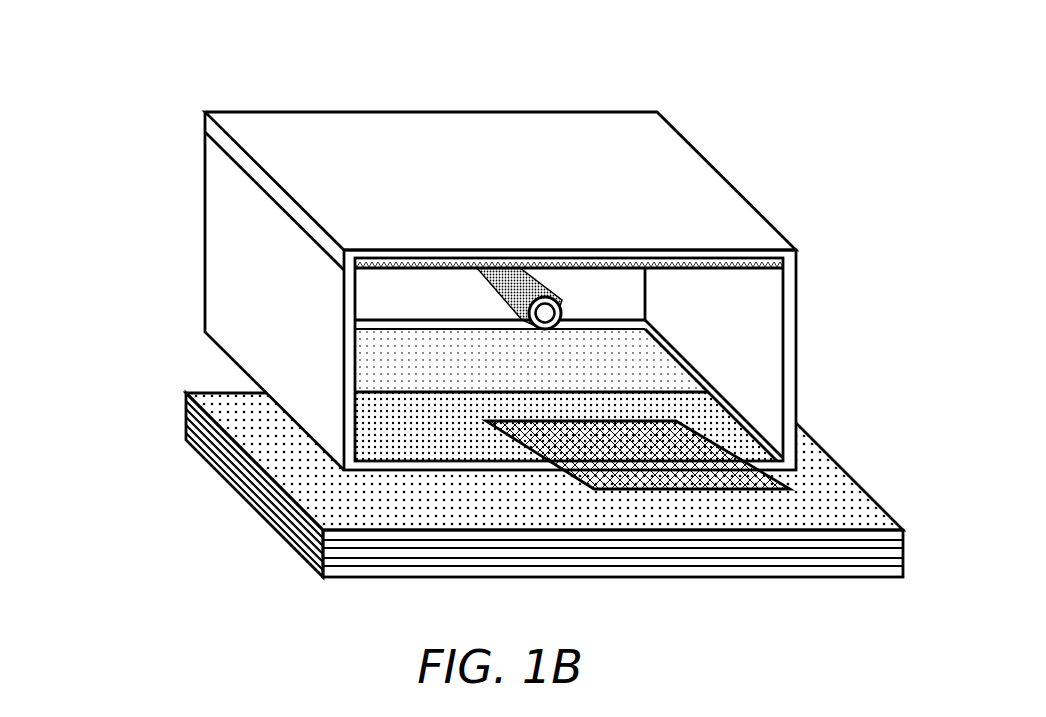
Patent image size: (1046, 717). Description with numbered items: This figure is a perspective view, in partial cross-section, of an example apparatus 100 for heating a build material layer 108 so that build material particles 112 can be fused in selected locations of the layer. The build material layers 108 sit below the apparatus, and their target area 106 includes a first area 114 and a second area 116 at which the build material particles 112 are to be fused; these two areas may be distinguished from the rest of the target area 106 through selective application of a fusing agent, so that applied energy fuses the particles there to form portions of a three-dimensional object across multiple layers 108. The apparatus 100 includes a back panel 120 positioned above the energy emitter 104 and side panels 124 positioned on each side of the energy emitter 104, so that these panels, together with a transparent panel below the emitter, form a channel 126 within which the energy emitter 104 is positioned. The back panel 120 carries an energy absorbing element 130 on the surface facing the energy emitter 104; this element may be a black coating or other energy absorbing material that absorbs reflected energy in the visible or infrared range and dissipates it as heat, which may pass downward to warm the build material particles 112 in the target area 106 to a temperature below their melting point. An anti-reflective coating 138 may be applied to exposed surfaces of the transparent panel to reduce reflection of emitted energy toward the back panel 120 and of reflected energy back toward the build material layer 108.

The apparatus 100 is at (170, 108).
The energy emitter 104 is at (572, 292).
The target area 106 is at (190, 393).
The build material layer 108 is at (907, 548).
The build material particles 112 is at (522, 270).
The first area 114 is at (398, 450).
The second area 116 is at (733, 462).
The back panel 120 is at (420, 130).
The side panels 124 is at (225, 258).
The channel 126 is at (423, 290).
The energy absorbing element 130 is at (705, 258).
The anti-reflective coating 138 is at (676, 355).